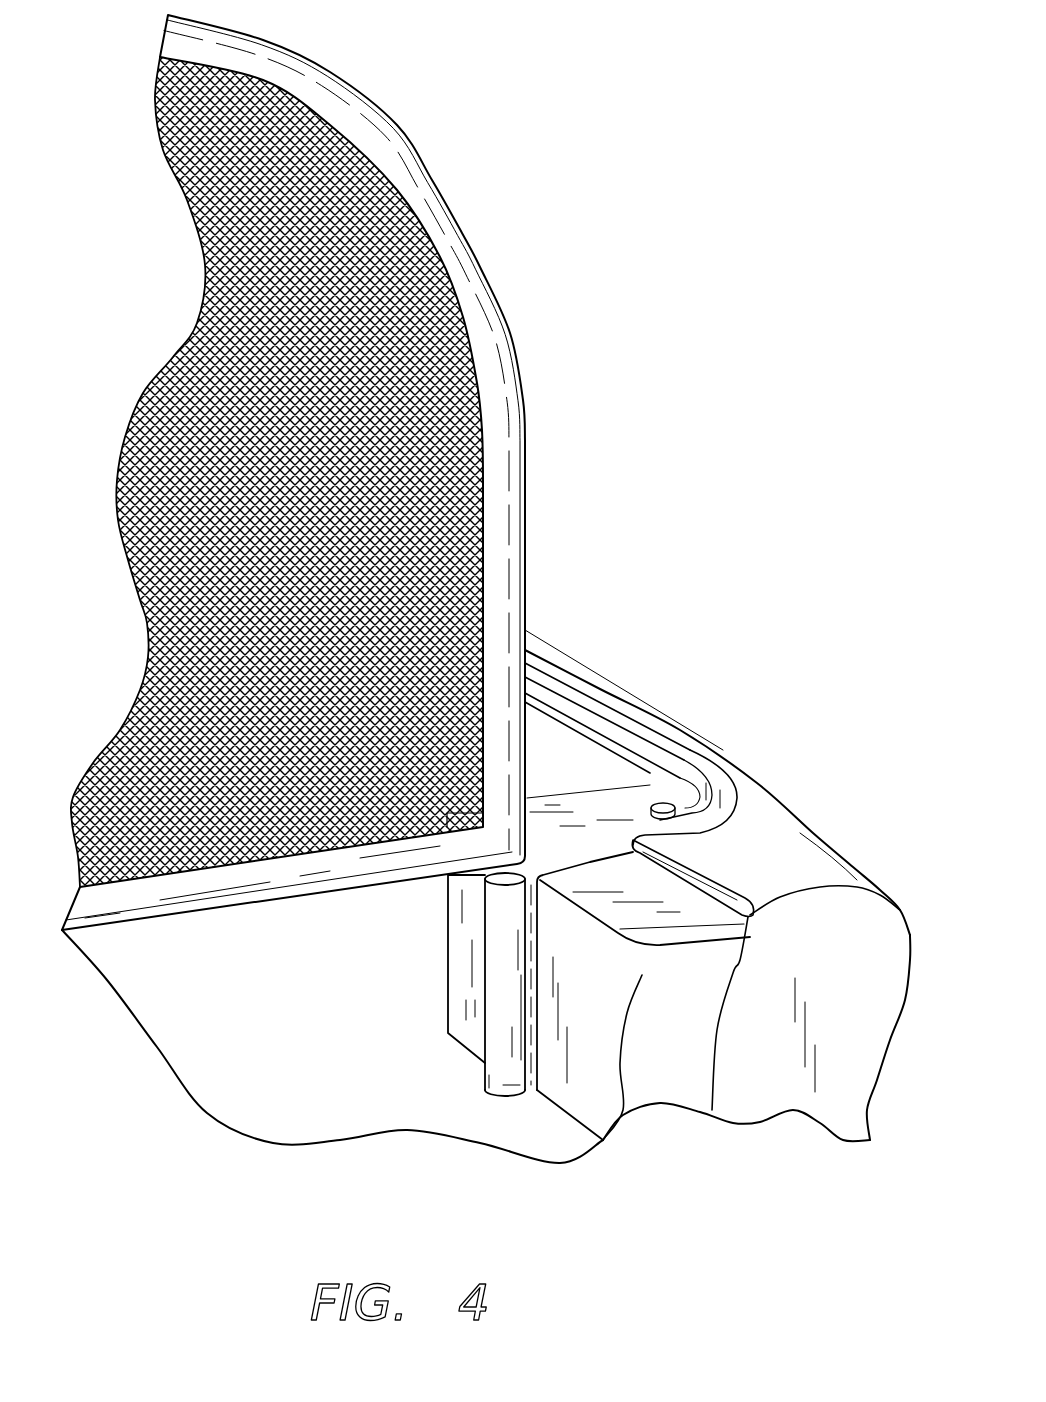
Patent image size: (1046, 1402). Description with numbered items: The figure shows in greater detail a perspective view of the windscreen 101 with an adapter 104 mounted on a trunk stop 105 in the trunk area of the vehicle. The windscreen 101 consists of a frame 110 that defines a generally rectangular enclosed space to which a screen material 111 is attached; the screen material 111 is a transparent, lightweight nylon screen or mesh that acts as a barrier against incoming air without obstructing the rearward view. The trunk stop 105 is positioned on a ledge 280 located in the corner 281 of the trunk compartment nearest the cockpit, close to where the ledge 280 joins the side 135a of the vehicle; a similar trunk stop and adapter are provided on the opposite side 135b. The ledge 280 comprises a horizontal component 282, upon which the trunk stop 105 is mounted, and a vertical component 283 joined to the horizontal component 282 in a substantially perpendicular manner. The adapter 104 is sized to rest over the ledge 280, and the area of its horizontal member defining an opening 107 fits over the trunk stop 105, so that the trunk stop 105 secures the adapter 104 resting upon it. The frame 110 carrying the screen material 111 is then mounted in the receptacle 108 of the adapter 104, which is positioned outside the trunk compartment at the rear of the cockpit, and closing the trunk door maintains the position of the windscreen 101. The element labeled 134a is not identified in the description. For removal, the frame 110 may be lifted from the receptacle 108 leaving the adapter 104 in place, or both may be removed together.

The windscreen 101 is at (566, 117).
The adapter 104 is at (343, 985).
The trunk stop 105 is at (664, 802).
The opening 107 is at (683, 834).
The receptacle 108 is at (470, 1050).
The frame 110 is at (500, 428).
The screen material 111 is at (446, 342).
The upper hinge pin end 134a is at (468, 884).
The side of the vehicle 135a is at (468, 902).
The side of the vehicle 135b is at (496, 1112).
The ledge 280 is at (571, 941).
The corner 281 is at (634, 849).
The horizontal component 282 is at (555, 762).
The vertical component 283 is at (447, 997).